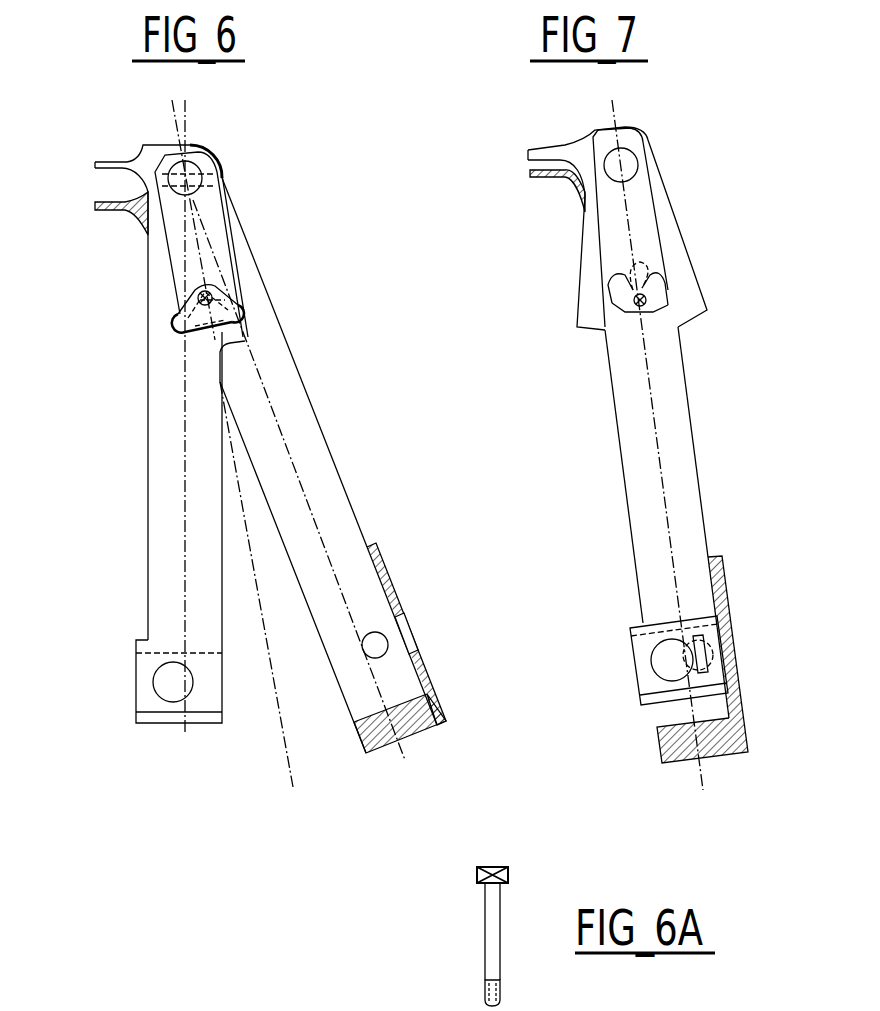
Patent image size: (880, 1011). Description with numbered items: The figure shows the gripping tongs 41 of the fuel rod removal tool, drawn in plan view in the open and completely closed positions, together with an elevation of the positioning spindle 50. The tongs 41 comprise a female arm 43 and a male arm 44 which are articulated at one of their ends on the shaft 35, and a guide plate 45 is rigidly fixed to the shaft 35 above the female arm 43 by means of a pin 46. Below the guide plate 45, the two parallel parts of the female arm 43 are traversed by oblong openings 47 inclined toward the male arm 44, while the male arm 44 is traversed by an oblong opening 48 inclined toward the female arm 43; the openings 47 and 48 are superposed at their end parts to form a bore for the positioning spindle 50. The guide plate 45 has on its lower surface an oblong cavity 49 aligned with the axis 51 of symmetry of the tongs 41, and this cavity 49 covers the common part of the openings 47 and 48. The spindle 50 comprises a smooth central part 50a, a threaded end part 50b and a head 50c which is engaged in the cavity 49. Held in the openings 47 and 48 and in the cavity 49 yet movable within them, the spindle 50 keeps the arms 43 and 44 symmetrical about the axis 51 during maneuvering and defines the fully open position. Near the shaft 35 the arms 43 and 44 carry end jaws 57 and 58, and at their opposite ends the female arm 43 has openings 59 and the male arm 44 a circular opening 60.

In FIG. 6, the shaft 35 is at (190, 163).
In FIG. 6, the tongs 41 is at (158, 727).
In FIG. 6, the female arm 43 is at (330, 498).
In FIG. 6, the male arm 44 is at (165, 560).
In FIG. 6, the guide plate 45 is at (215, 232).
In FIG. 6, the pin 46 is at (222, 168).
In FIG. 6, the oblong openings 47 is at (244, 302).
In FIG. 7, the oblong openings 47 is at (668, 292).
In FIG. 6, the oblong opening 48 is at (173, 312).
In FIG. 7, the oblong opening 48 is at (612, 292).
In FIG. 6, the oblong cavity 49 is at (196, 276).
In FIG. 6, the positioning spindle 50 is at (213, 300).
In FIG. 7, the positioning spindle 50 is at (640, 310).
In FIG. 6A, the positioning spindle 50 is at (493, 936).
In FIG. 6A, the central part 50a is at (490, 928).
In FIG. 6A, the threaded end part 50b is at (488, 990).
In FIG. 6A, the head 50c is at (477, 880).
In FIG. 6, the axis of symmetry 51 is at (280, 718).
In FIG. 6, the end jaw 57 is at (105, 210).
In FIG. 6, the end jaw 58 is at (107, 162).
In FIG. 6, the openings 59 is at (390, 644).
In FIG. 6, the circular opening 60 is at (152, 682).